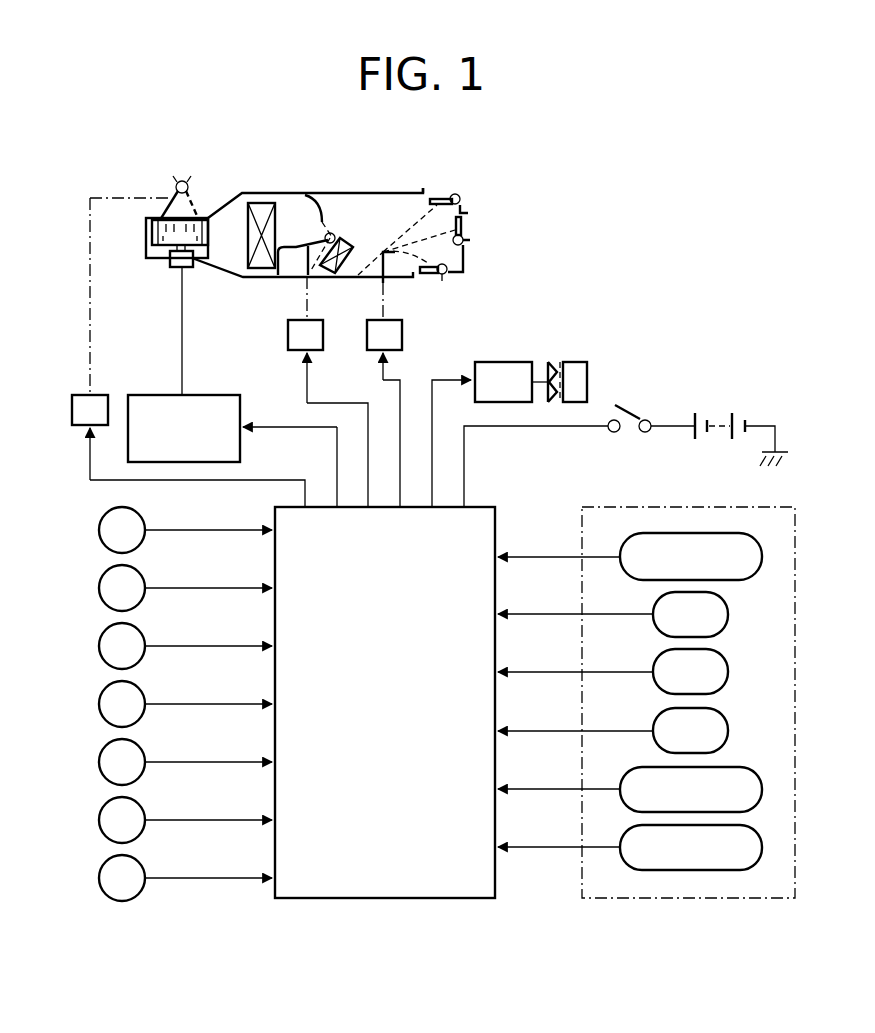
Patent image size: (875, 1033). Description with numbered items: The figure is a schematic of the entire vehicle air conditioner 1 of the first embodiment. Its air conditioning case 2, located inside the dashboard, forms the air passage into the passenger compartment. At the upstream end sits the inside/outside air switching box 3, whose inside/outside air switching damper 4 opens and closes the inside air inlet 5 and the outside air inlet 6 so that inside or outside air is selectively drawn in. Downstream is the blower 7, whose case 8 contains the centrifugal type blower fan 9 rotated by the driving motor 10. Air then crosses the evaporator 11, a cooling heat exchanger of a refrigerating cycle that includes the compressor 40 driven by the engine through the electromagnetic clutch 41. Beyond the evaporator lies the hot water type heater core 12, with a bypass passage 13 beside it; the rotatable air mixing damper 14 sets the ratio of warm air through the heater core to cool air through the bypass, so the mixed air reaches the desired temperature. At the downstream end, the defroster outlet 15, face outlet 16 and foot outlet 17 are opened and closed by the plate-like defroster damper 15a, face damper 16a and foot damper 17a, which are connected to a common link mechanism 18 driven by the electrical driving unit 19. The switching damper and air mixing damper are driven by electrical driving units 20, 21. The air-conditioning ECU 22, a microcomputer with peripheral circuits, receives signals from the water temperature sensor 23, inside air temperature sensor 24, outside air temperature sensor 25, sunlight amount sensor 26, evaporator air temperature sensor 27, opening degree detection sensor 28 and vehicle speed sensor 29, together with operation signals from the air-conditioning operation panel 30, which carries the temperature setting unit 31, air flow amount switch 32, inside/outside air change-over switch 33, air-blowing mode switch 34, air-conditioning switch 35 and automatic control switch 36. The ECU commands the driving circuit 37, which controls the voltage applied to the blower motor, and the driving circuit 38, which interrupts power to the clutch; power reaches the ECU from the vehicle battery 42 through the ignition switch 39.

The air conditioner 1 is at (266, 179).
The air conditioning case 2 is at (366, 193).
The inside/outside air switching box 3 is at (160, 179).
The inside/outside air switching damper 4 is at (181, 180).
The inside air inlet 5 is at (168, 192).
The outside air inlet 6 is at (195, 198).
The blower 7 is at (158, 264).
The case 8 is at (147, 226).
The centrifugal type blower fan 9 is at (153, 238).
The driving motor 10 is at (193, 265).
The evaporator 11 is at (267, 210).
The hot water type heater core 12 is at (333, 274).
The bypass passage 13 is at (328, 203).
The air mixing damper 14 is at (278, 276).
The defroster outlet 15 is at (444, 190).
The defroster damper 15a is at (427, 199).
The face outlet 16 is at (468, 229).
The face damper 16a is at (463, 200).
The foot outlet 17 is at (433, 283).
The foot damper 17a is at (447, 265).
The link mechanism 18 is at (368, 276).
The electrical driving unit 19 is at (402, 332).
The electrical driving unit 20 is at (80, 395).
The electrical driving unit 21 is at (323, 332).
The air-conditioning electronic control unit 22 is at (483, 504).
The water temperature sensor 23 is at (98, 532).
The inside air temperature sensor 24 is at (98, 590).
The outside air temperature sensor 25 is at (98, 648).
The sunlight amount sensor 26 is at (98, 706).
The evaporator air temperature sensor 27 is at (98, 764).
The opening degree detection sensor 28 is at (98, 822).
The vehicle speed sensor 29 is at (98, 880).
The air-conditioning operation panel 30 is at (795, 522).
The temperature setting unit 31 is at (762, 557).
The air flow amount switch 32 is at (728, 614).
The inside/outside air change-over switch 33 is at (728, 672).
The air-blowing mode switch 34 is at (728, 731).
The air-conditioning switch 35 is at (762, 789).
The automatic control switch 36 is at (762, 847).
The driving circuit 37 is at (218, 395).
The driving circuit 38 is at (508, 362).
The ignition switch 39 is at (625, 406).
The compressor 40 is at (582, 360).
The electromagnetic clutch 41 is at (553, 362).
The vehicle battery 42 is at (732, 414).